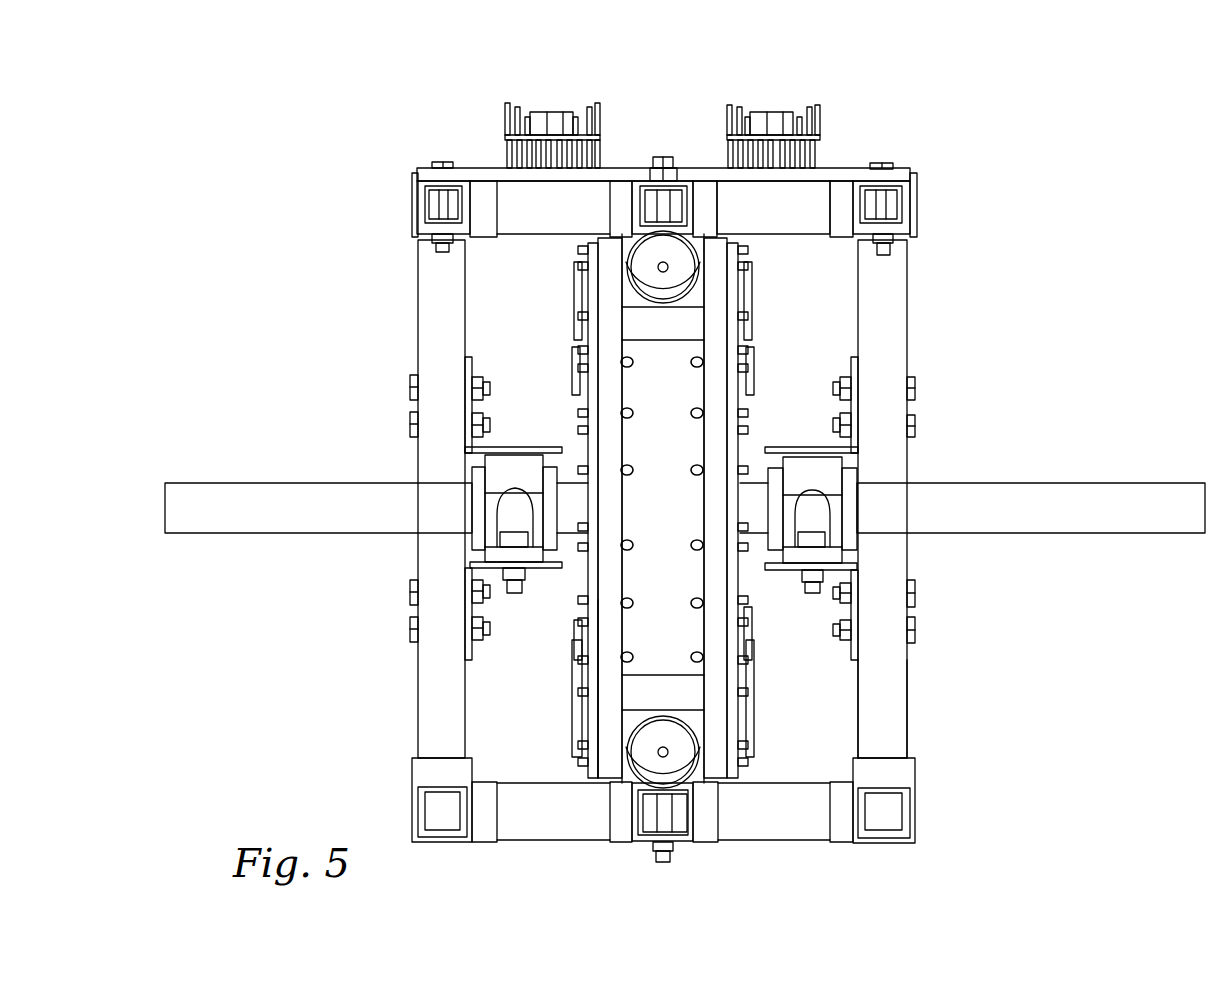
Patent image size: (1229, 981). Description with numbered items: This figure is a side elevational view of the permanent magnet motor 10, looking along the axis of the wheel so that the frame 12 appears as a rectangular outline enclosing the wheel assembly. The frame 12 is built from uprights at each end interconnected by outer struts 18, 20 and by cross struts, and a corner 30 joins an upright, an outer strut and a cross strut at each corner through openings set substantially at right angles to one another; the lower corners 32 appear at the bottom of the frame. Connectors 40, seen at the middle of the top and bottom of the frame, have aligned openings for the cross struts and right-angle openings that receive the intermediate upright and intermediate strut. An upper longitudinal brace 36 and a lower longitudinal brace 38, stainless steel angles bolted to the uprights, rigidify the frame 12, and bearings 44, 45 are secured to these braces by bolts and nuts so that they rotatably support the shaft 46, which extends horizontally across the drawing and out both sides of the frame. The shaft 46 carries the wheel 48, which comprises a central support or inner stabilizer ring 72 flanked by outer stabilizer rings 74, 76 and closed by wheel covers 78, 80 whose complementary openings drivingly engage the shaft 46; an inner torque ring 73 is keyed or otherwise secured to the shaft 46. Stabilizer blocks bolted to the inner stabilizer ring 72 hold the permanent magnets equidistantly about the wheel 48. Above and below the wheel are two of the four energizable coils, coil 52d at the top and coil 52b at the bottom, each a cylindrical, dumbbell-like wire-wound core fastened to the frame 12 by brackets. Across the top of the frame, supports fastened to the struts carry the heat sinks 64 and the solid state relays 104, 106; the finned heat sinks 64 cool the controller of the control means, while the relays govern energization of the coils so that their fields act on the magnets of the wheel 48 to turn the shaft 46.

The permanent magnet motor 10 is at (719, 146).
The frame 12 is at (936, 499).
The outer strut 18 is at (394, 499).
The outer strut 20 is at (932, 704).
The corner 30 is at (611, 220).
The lower corner block 32 is at (659, 790).
The upper longitudinal brace 36 is at (661, 405).
The lower longitudinal brace 38 is at (661, 611).
The connector 40 is at (723, 523).
The bearing 44 is at (434, 525).
The bearing 45 is at (986, 525).
The shaft 46 is at (466, 477).
The wheel 48 is at (546, 689).
The energizable coil 52b is at (604, 797).
The energizable coil 52d is at (712, 177).
The heat sink 64 is at (703, 121).
The inner stabilizer ring 72 is at (720, 508).
The inner torque ring 73 is at (664, 171).
The outer stabilizer ring 74 is at (557, 508).
The outer stabilizer ring 76 is at (769, 508).
The wheel cover 78 is at (623, 499).
The wheel cover 80 is at (706, 506).
The solid state relay 104 is at (579, 96).
The solid state relay 106 is at (809, 96).